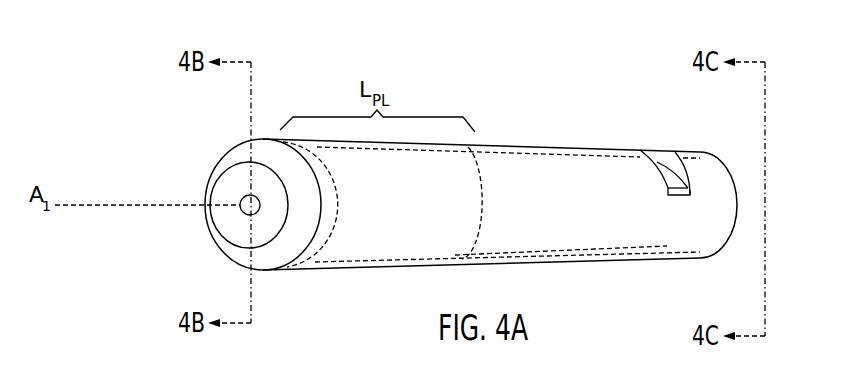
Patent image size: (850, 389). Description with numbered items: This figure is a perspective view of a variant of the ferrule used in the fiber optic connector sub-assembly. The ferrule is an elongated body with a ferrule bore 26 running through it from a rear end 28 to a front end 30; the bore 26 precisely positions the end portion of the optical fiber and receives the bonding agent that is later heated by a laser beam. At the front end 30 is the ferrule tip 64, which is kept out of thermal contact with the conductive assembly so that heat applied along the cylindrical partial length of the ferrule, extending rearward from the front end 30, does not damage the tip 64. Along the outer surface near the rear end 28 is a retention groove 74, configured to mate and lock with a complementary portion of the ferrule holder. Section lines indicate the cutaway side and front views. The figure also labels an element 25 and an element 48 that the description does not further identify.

The elongate body 25 is at (363, 235).
The ferrule bore 26 is at (248, 195).
The rear end 28 is at (746, 252).
The front end 30 is at (200, 242).
The passage 48 is at (443, 185).
The ferrule tip 64 is at (262, 182).
The retention groove 74 is at (670, 160).